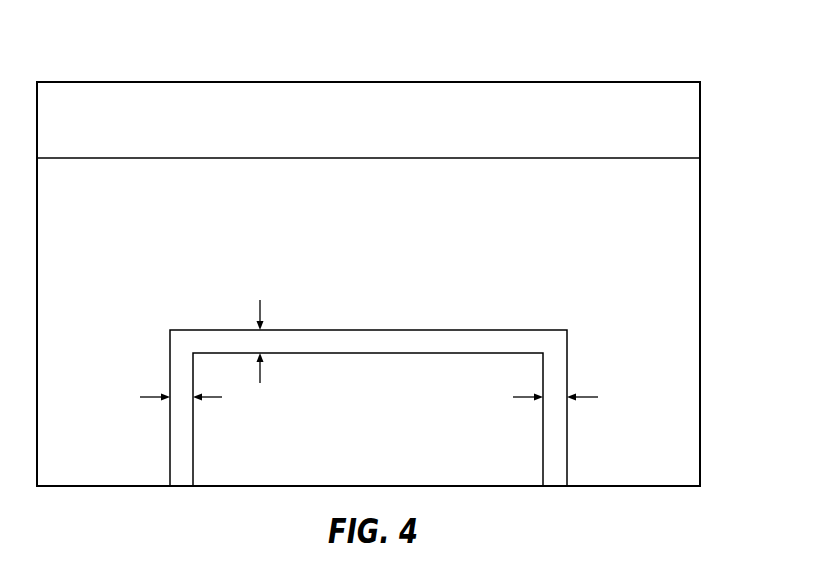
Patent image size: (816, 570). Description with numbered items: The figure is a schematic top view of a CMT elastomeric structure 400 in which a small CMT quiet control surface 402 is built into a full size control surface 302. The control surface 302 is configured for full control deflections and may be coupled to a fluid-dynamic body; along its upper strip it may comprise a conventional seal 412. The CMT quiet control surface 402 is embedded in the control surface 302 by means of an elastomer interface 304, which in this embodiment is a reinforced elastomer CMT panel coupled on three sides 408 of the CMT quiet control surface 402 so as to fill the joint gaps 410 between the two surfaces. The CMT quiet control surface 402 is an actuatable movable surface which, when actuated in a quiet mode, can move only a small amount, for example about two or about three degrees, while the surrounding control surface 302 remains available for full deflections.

The CMT elastomeric structure 400 is at (615, 47).
The conventional seal 412 is at (678, 117).
The control surface 302 is at (678, 183).
The elastomer interface 304 is at (207, 342).
The three sides 408 is at (520, 352).
The joint gaps 410 is at (369, 343).
The CMT quiet control surface 402 is at (249, 477).